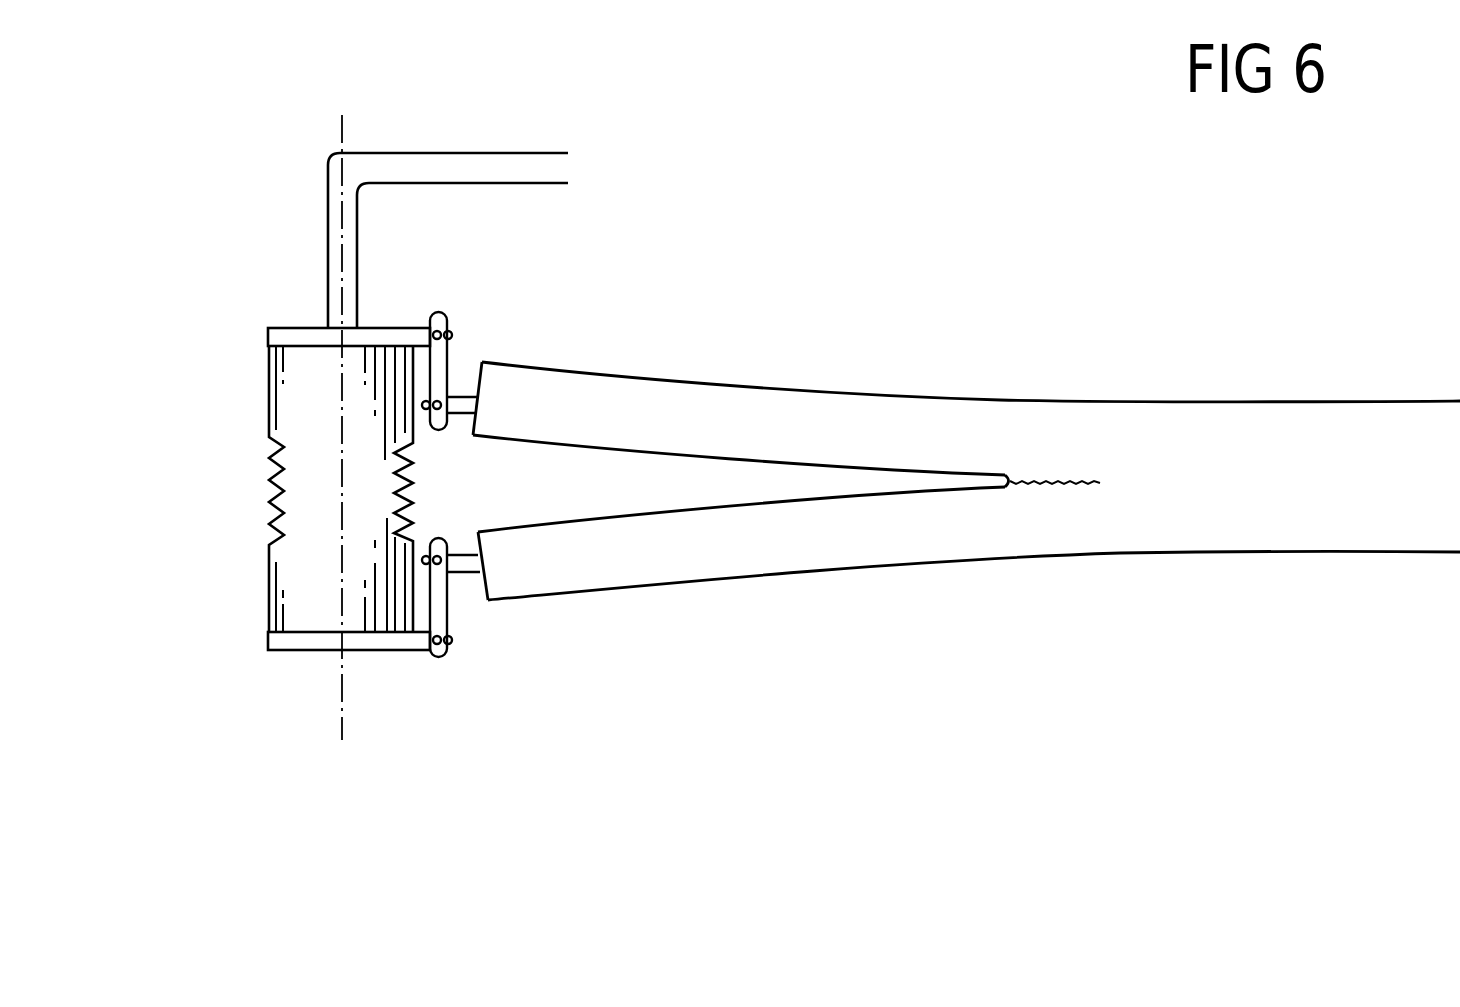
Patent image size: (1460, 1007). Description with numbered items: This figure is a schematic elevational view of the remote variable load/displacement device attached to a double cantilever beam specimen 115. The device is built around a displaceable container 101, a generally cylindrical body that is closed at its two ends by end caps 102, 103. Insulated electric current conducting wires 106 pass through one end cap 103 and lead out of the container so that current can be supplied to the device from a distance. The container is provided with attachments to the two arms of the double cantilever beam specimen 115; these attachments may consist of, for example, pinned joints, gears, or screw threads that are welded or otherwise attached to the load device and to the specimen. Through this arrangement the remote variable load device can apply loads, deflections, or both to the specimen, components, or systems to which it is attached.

The displaceable container 101 is at (307, 438).
The end cap 102 is at (307, 640).
The end cap 103 is at (305, 330).
The insulated electric current conducting wires 106 is at (330, 235).
The double cantilever beam specimen 115 is at (642, 403).